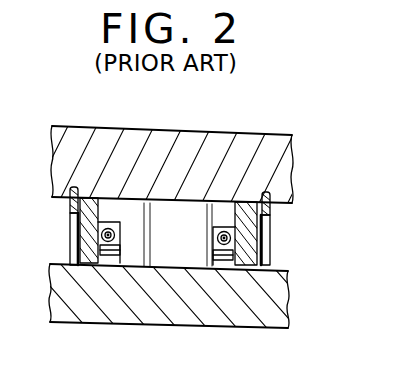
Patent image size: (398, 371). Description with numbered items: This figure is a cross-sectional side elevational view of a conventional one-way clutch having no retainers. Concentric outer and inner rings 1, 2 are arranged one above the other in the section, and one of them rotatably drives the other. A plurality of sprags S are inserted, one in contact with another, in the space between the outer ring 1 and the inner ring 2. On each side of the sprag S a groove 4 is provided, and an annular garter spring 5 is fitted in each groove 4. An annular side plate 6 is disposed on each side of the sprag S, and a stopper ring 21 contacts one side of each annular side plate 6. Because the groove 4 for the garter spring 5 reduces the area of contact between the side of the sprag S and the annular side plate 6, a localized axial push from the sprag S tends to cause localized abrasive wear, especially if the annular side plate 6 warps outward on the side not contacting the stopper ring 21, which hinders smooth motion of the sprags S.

The outer ring 1 is at (160, 147).
The inner ring 2 is at (157, 318).
The stopper ring 21 is at (70, 207).
The annular side plate 6 is at (78, 243).
The annular garter spring 5 is at (107, 256).
The groove 4 is at (120, 246).
The sprag S is at (184, 250).